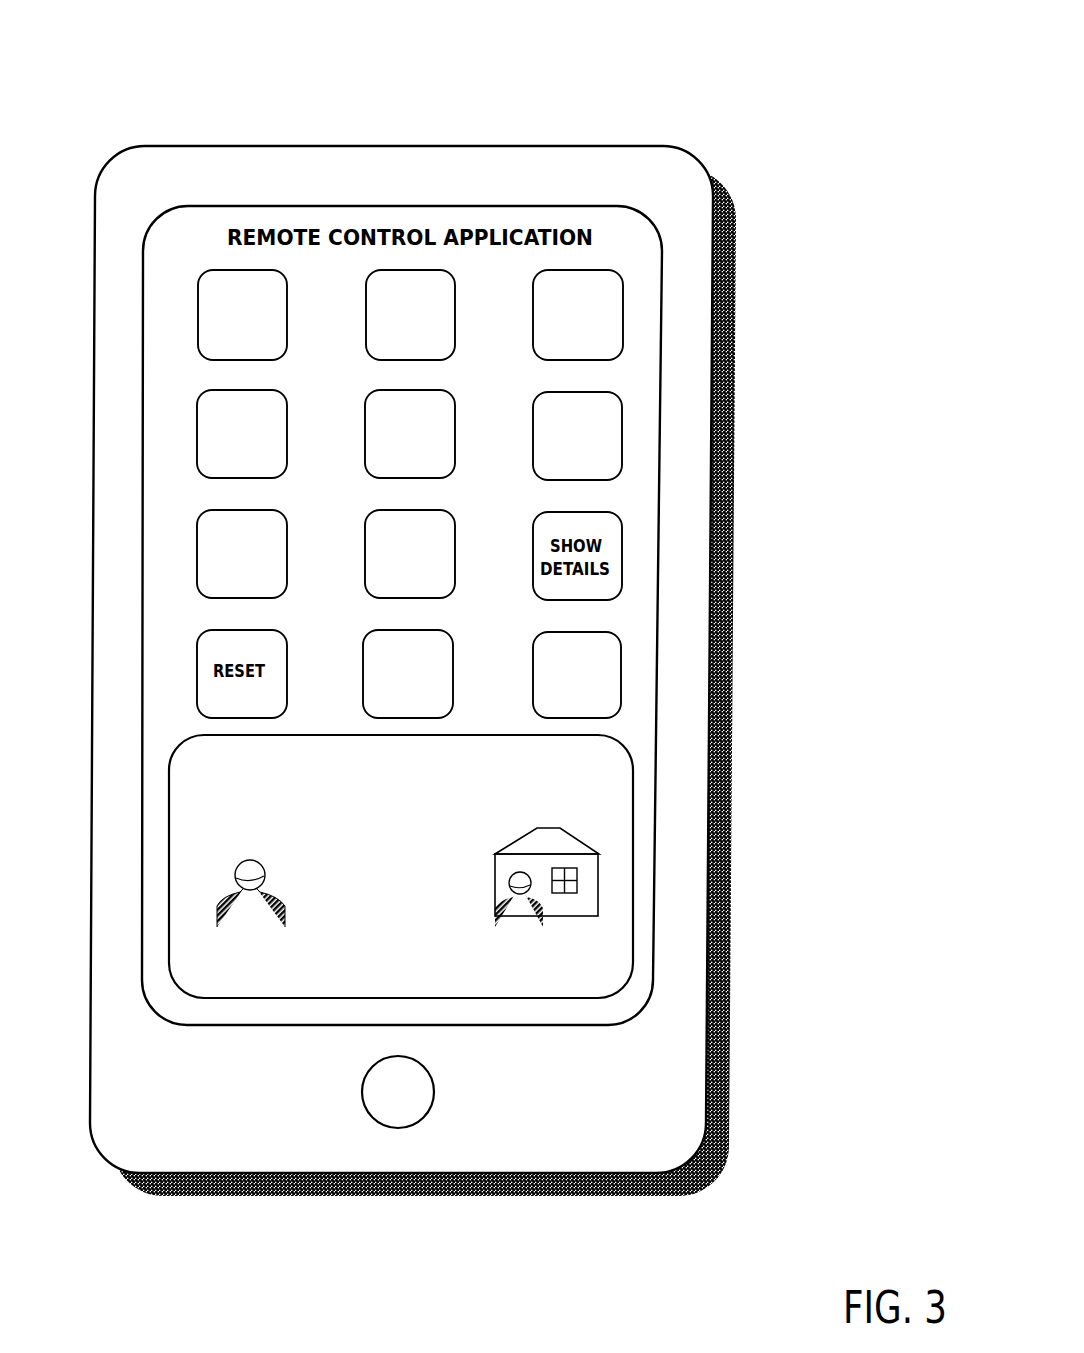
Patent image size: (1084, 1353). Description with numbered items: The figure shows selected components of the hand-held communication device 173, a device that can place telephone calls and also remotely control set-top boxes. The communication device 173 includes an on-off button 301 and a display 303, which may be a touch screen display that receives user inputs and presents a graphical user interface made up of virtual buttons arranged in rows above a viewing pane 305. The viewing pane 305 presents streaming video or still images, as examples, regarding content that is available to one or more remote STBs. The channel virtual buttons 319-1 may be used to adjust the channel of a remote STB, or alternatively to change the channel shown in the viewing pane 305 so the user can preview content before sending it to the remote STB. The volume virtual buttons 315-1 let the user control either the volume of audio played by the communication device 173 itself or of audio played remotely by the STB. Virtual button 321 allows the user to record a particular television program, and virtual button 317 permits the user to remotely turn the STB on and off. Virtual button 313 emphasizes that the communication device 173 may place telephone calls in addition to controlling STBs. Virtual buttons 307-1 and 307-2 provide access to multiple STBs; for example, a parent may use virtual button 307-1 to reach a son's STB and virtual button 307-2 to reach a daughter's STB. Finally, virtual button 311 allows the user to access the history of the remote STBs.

The communication device 173 is at (336, 44).
The on-off button 301 is at (434, 1079).
The display 303 is at (577, 1030).
The viewing pane 305 is at (633, 826).
The virtual button 307-1 is at (453, 668).
The virtual button 307-2 is at (623, 668).
The virtual button 311 is at (622, 432).
The virtual button 313 is at (623, 318).
The virtual button 315-1 is at (455, 318).
The virtual button 317 is at (455, 542).
The virtual button 319-1 is at (287, 309).
The virtual button 321 is at (287, 553).